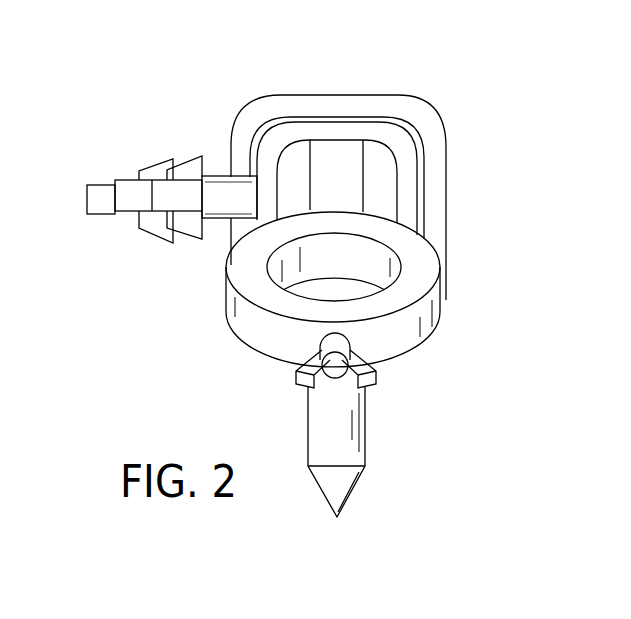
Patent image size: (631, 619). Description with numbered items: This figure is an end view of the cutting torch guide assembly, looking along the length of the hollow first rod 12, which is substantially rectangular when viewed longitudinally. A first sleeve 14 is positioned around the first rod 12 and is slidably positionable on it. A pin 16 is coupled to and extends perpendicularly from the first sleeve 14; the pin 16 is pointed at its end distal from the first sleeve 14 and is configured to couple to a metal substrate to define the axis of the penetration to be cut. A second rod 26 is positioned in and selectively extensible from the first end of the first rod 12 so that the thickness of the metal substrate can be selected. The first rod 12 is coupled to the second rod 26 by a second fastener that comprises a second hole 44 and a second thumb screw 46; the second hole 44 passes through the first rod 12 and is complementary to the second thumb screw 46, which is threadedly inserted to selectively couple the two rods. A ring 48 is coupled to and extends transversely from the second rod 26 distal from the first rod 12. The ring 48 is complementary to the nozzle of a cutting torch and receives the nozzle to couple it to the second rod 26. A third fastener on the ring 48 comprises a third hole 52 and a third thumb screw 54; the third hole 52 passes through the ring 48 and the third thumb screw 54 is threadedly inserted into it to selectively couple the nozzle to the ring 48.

The first sleeve 14 is at (288, 108).
The first rod 12 is at (327, 128).
The second rod 26 is at (383, 178).
The second hole 44 is at (228, 192).
The second thumb screw 46 is at (195, 163).
The ring 48 is at (430, 267).
The third hole 52 is at (350, 333).
The third thumb screw 54 is at (294, 376).
The pin 16 is at (347, 430).